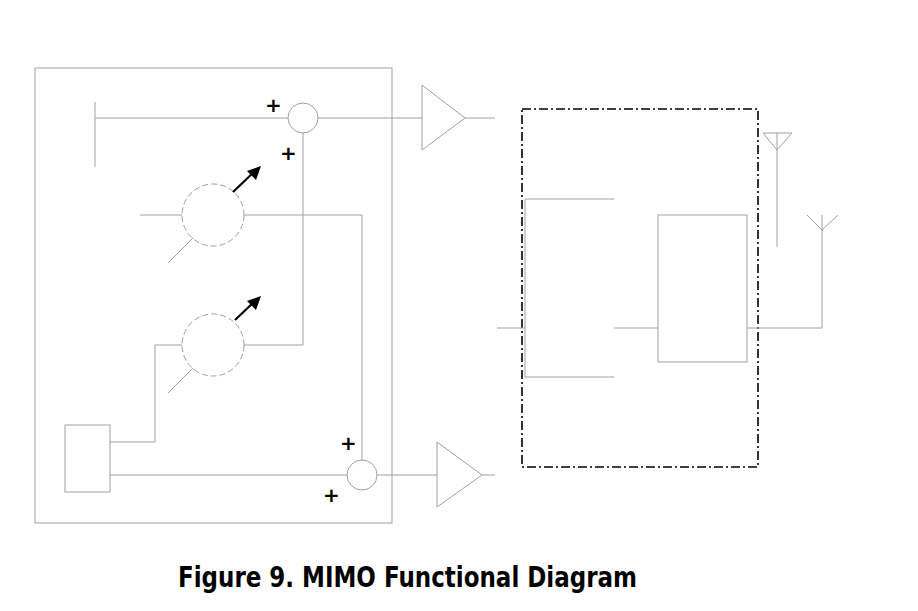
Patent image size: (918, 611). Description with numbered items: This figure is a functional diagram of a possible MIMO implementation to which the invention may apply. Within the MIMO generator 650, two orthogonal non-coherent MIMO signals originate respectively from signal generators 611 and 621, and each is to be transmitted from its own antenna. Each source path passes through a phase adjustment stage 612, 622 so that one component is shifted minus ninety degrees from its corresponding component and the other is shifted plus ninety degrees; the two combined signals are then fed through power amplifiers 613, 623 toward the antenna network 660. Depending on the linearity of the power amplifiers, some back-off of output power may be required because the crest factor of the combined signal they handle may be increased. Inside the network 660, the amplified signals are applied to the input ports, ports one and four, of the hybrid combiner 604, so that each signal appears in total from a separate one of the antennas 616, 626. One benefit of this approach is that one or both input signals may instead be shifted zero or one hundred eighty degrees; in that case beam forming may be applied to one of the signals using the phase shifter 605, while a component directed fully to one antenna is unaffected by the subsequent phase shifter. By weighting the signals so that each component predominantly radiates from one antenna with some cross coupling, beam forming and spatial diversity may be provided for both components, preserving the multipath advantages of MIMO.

The MIMO generator 650 is at (213, 282).
The signal generator 611 is at (173, 156).
The first phase shifter 612 is at (251, 230).
The signal generator 621 is at (205, 418).
The second phase shifter 622 is at (229, 348).
The first power amplifier 613 is at (406, 108).
The second power amplifier 623 is at (446, 477).
The antenna feed network 660 is at (640, 272).
The hybrid combiner 604 is at (577, 310).
The phase shifter 605 is at (702, 306).
The antenna A 616 is at (780, 173).
The antenna B 626 is at (800, 253).